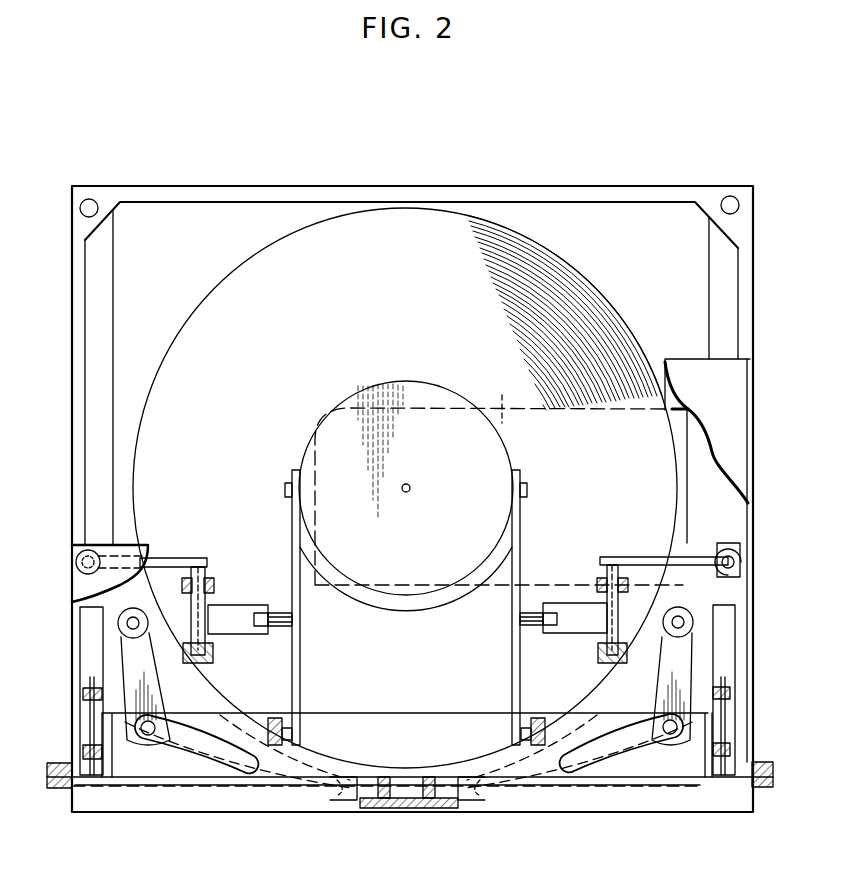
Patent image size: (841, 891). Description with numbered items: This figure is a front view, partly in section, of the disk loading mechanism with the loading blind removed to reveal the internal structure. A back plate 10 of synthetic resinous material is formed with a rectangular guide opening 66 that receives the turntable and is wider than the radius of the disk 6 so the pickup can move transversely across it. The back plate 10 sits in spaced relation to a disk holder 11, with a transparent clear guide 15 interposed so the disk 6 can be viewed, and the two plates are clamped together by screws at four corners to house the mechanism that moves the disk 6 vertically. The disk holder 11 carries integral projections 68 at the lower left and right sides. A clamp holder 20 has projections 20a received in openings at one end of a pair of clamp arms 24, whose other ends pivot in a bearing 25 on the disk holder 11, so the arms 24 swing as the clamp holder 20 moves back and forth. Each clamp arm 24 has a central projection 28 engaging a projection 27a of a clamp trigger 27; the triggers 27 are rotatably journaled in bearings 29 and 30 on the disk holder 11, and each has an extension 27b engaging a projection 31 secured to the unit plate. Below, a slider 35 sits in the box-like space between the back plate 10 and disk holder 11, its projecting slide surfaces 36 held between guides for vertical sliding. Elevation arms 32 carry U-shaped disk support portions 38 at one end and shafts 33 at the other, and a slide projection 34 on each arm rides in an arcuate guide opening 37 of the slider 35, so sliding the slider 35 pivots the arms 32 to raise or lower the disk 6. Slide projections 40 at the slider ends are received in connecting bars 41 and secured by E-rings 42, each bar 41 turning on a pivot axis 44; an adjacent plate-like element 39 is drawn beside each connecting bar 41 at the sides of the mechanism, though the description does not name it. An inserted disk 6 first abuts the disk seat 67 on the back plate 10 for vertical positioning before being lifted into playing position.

The disk 6 is at (398, 222).
The back plate 10 is at (615, 232).
The disk holder 11 is at (178, 186).
The clear guide 15 is at (255, 215).
The clamp holder 20 is at (443, 396).
The projections 20a is at (289, 486).
The clamp arms 24 is at (292, 525).
The bearing 25 is at (278, 718).
The clamp triggers 27 is at (192, 613).
The projections 27a is at (242, 630).
The extension 27b is at (167, 556).
The projection 28 is at (283, 613).
The bearing 29 is at (202, 665).
The bearing 30 is at (214, 587).
The projections 31 is at (85, 546).
The elevation arms 32 is at (165, 710).
The shafts 33 is at (128, 623).
The slide projection 34 is at (152, 737).
The slider 35 is at (660, 767).
The projecting slide surfaces 36 is at (108, 750).
The guide openings 37 is at (218, 768).
The disk support portions 38 is at (338, 790).
The guide plate 39 is at (92, 637).
The slide projections 40 is at (95, 768).
The connecting bar 41 is at (95, 718).
The E-ring 42 is at (83, 768).
The pivot axis 44 is at (92, 677).
The guide opening 66 is at (492, 396).
The disk seat 67 is at (430, 802).
The projections 68 is at (55, 790).